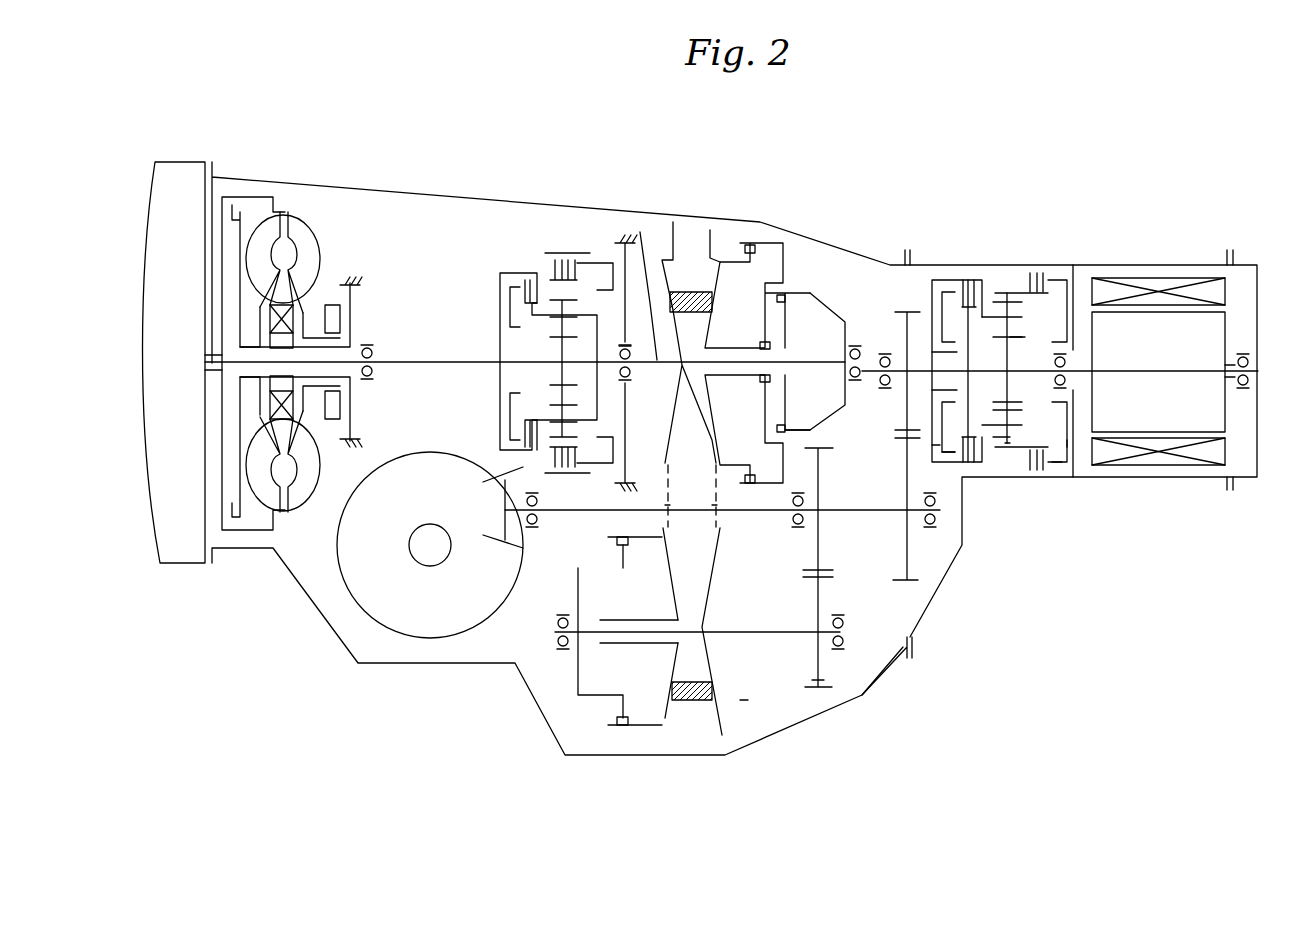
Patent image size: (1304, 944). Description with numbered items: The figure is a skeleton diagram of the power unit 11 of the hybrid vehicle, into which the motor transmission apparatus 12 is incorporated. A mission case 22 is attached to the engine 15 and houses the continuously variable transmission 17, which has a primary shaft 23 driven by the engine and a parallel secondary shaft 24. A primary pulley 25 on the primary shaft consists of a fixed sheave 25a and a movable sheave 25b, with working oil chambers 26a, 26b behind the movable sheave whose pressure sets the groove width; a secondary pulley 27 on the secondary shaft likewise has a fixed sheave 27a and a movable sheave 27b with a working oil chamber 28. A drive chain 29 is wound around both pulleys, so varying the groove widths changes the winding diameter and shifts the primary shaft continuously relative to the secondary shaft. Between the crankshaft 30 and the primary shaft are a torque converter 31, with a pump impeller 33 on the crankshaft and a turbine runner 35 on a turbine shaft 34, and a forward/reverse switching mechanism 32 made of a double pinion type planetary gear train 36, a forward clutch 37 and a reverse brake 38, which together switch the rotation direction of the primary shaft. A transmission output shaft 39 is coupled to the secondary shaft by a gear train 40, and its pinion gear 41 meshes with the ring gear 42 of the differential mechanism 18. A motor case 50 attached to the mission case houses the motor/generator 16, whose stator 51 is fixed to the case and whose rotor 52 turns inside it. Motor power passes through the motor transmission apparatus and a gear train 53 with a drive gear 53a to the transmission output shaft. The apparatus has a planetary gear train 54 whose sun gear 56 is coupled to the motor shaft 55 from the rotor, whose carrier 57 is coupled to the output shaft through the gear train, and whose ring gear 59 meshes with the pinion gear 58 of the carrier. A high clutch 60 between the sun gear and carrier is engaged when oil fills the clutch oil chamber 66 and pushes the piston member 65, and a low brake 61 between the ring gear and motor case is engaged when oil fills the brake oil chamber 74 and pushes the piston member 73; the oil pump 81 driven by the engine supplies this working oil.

The power unit 11 is at (426, 120).
The motor transmission apparatus 12 is at (924, 264).
The engine 15 is at (190, 197).
The motor/generator 16 is at (1213, 190).
The continuously variable transmission 17 is at (752, 694).
The differential mechanism 18 is at (335, 580).
The mission case 22 is at (465, 192).
The primary shaft 23 is at (650, 300).
The secondary shaft 24 is at (777, 632).
The primary pulley 25 is at (735, 157).
The fixed sheave 25a is at (668, 260).
The movable sheave 25b is at (710, 258).
The working oil chamber 26a is at (750, 285).
The working oil chamber 26b is at (803, 335).
The secondary pulley 27 is at (653, 805).
The fixed sheave 27a is at (715, 715).
The movable sheave 27b is at (670, 722).
The working oil chamber 28 is at (610, 672).
The drive chain 29 is at (665, 698).
The crankshaft 30 is at (212, 360).
The torque converter 31 is at (300, 205).
The forward/reverse switching mechanism 32 is at (590, 242).
The pump impeller 33 is at (312, 252).
The turbine shaft 34 is at (330, 360).
The turbine runner 35 is at (262, 250).
The double pinion type planetary gear train 36 is at (581, 440).
The forward clutch 37 is at (520, 272).
The reverse brake 38 is at (565, 262).
The transmission output shaft 39 is at (753, 512).
The gear train 40 is at (823, 695).
The pinion gear 41 is at (490, 537).
The ring gear 42 is at (353, 598).
The motor case 50 is at (1162, 278).
The stator 51 is at (1200, 290).
The rotor 52 is at (1200, 350).
The gear train 53 is at (900, 603).
The drive gear 53a is at (897, 310).
The planetary gear train 54 is at (997, 264).
The motor shaft 55 is at (1080, 355).
The sun gear 56 is at (1018, 395).
The carrier 57 is at (982, 438).
The pinion gear 58 is at (1012, 445).
The ring gear 59 is at (1015, 280).
The high clutch 60 is at (956, 264).
The low brake 61 is at (1043, 261).
The piston member 65 is at (950, 462).
The clutch oil chamber 66 is at (933, 452).
The piston member 73 is at (1058, 470).
The brake oil chamber 74 is at (1073, 447).
The oil pump 81 is at (332, 310).